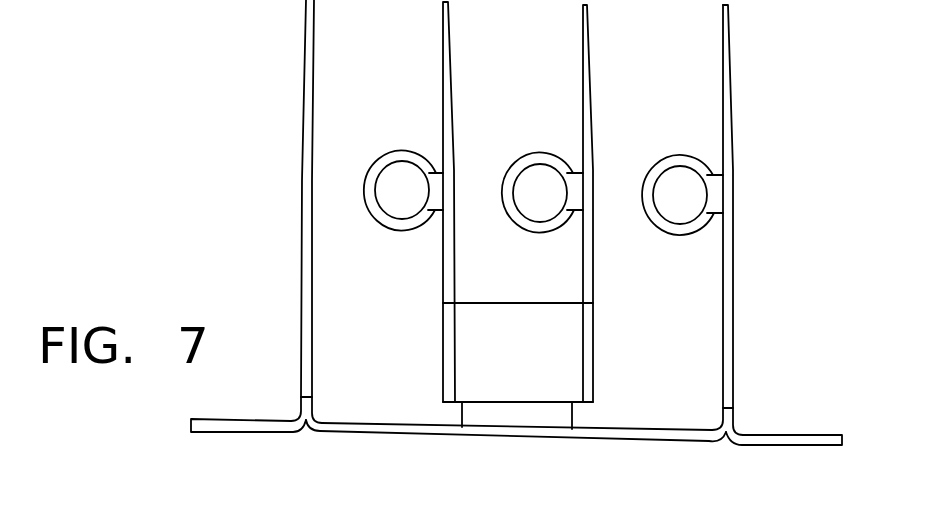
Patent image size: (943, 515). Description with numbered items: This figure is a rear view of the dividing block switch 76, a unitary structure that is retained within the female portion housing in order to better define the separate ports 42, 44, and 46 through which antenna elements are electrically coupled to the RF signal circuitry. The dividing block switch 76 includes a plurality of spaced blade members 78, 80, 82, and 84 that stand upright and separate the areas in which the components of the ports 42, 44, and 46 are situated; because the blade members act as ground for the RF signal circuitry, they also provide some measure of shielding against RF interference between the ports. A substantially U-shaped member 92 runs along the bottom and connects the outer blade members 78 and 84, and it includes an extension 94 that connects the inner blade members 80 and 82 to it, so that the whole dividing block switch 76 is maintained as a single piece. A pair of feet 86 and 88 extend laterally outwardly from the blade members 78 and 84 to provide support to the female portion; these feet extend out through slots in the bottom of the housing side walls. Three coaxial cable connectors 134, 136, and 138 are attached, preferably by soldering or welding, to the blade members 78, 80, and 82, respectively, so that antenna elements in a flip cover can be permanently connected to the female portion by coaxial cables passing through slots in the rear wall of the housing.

The port 42 is at (622, 49).
The port 44 is at (482, 65).
The port 46 is at (342, 90).
The dividing block switch 76 is at (266, 180).
The blade member 78 is at (725, 115).
The blade member 80 is at (589, 143).
The blade member 82 is at (450, 140).
The blade member 84 is at (303, 83).
The foot 86 is at (800, 442).
The foot 88 is at (222, 427).
The U-shaped member 92 is at (383, 432).
The extension 94 is at (465, 358).
The coaxial cable connector 134 is at (696, 230).
The coaxial cable connector 136 is at (556, 228).
The coaxial cable connector 138 is at (416, 226).